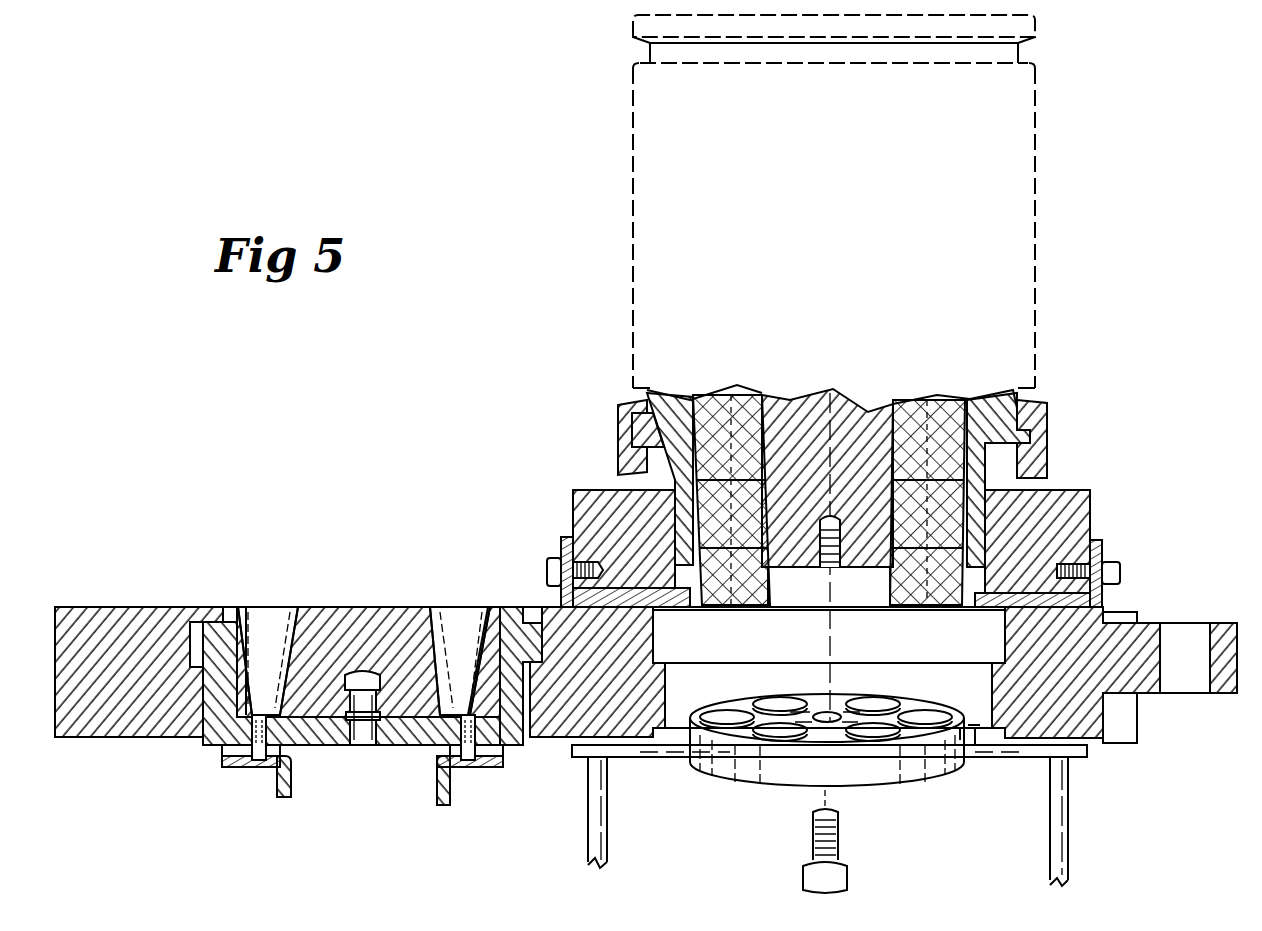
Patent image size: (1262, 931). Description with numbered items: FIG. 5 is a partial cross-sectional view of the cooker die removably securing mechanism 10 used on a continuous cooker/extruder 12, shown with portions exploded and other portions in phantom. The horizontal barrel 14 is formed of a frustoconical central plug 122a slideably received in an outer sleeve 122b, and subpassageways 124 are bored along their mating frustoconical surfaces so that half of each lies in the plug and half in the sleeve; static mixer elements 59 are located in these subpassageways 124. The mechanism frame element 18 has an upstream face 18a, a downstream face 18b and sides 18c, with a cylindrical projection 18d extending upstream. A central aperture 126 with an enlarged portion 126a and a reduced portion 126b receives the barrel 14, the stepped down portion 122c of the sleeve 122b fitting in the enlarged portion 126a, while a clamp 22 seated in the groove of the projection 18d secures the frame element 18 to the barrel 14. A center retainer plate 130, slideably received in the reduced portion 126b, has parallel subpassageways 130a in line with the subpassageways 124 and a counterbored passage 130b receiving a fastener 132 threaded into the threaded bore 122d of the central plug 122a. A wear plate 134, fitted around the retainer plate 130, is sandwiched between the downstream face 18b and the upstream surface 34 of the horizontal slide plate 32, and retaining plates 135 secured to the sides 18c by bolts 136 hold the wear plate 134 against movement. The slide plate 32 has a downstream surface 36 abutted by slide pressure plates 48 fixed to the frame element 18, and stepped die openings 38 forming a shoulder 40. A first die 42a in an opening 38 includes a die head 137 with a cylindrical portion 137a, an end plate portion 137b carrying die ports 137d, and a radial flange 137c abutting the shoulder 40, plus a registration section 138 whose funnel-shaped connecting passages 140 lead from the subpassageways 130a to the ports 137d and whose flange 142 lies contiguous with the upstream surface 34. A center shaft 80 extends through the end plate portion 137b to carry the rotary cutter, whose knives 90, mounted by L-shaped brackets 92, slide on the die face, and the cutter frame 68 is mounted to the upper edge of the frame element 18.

The mechanism 10 is at (446, 127).
The cooker/extruder 12 is at (609, 173).
The barrel 14 is at (1035, 192).
The mechanism frame element 18 is at (560, 475).
The upstream face 18a is at (598, 490).
The downstream face 18b is at (680, 600).
The sides 18c is at (573, 513).
The cylindrical projection 18d is at (640, 447).
The clamp 22 is at (1030, 415).
The slide plate 32 is at (74, 600).
The upstream surface 34 is at (66, 607).
The downstream surface 36 is at (98, 740).
The die openings 38 is at (973, 725).
The shoulder 40 is at (217, 618).
The first die 42a is at (411, 755).
The slide pressure plates 48 is at (1087, 752).
The mixer elements 59 is at (735, 608).
The cutter frame 68 is at (1072, 855).
The center shaft 80 is at (358, 748).
The knives 90 is at (232, 768).
The L-shaped brackets 92 is at (285, 805).
The central plug 122a is at (790, 583).
The outer sleeve 122b is at (1040, 270).
The stepped down portion 122c is at (1000, 530).
The threaded bore 122d is at (836, 570).
The subpassageways 124 is at (698, 395).
The central aperture 126 is at (1000, 500).
The enlarged portion 126a is at (1047, 430).
The reduced portion 126b is at (930, 610).
The center retainer plate 130 is at (893, 792).
The subpassageways 130a is at (760, 698).
The counterbored passage 130b is at (830, 713).
The fastener 132 is at (803, 868).
The wear plate 134 is at (667, 610).
The retaining plates 135 is at (1104, 553).
The bolts 136 is at (1104, 580).
The die head 137 is at (185, 610).
The cylindrical portion 137a is at (200, 705).
The end plate portion 137b is at (312, 748).
The radial flange 137c is at (180, 620).
The die ports 137d is at (266, 760).
The registration section 138 is at (368, 605).
The connecting passages 140 is at (297, 608).
The flange 142 is at (182, 640).